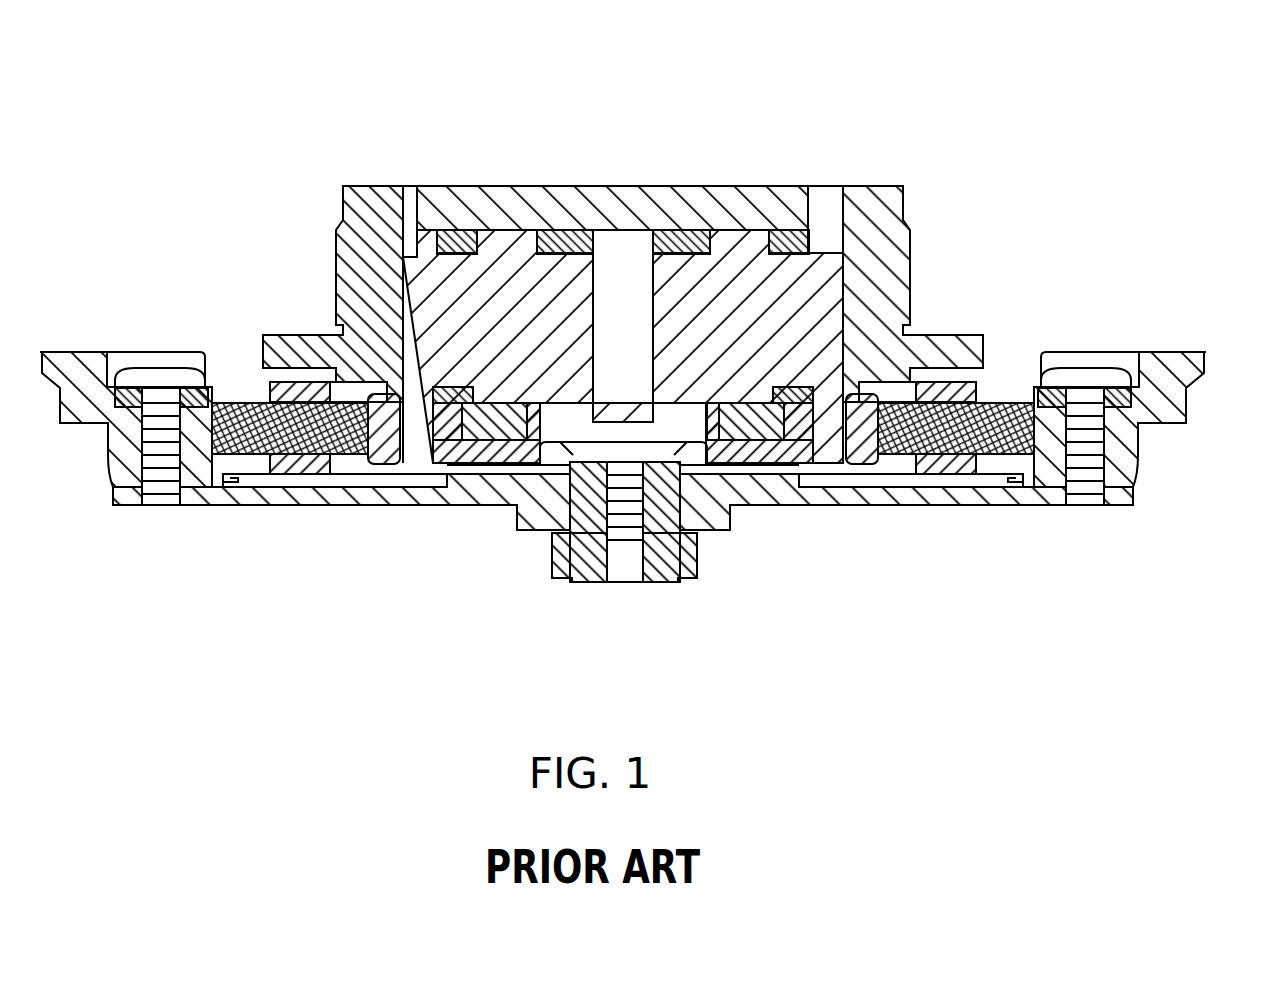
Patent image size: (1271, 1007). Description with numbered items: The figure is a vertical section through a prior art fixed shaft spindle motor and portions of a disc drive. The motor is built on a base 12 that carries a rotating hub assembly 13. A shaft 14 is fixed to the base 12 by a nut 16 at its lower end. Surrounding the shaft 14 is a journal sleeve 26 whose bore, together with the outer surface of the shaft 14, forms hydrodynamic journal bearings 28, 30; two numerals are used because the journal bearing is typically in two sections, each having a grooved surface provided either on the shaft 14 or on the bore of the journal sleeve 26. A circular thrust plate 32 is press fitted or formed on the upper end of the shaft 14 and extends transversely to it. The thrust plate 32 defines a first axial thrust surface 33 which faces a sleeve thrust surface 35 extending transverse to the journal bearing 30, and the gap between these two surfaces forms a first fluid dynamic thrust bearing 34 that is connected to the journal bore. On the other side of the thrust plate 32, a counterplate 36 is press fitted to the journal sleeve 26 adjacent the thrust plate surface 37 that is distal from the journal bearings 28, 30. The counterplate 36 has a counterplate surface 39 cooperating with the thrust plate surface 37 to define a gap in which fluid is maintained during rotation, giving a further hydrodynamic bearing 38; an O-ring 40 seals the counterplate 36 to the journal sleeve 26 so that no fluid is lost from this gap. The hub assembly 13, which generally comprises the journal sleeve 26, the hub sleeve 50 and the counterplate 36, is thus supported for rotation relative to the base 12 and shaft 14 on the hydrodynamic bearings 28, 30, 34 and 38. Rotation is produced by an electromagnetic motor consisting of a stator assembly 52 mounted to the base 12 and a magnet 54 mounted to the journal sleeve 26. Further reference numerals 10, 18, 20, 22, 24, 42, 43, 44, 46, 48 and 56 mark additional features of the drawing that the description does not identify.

The valve assembly 10 is at (232, 160).
The base 12 is at (888, 503).
The hub assembly 13 is at (1012, 340).
The shaft 14 is at (660, 228).
The nut 16 is at (690, 580).
The bore edge 18 is at (607, 228).
The bore edge 20 is at (638, 228).
The seal 22 is at (633, 228).
The piston 24 is at (653, 303).
The journal sleeve 26 is at (592, 303).
The hydrodynamic journal bearing 28 is at (592, 382).
The hydrodynamic journal bearing 30 is at (400, 256).
The thrust plate 32 is at (543, 226).
The first axial thrust surface 33 is at (542, 228).
The first fluid dynamic thrust bearing 34 is at (471, 210).
The sleeve thrust surface 35 is at (598, 283).
The counterplate 36 is at (447, 183).
The thrust plate surface 37 is at (548, 228).
The hydrodynamic bearing 38 is at (570, 228).
The counterplate surface 39 is at (700, 228).
The O-ring 40 is at (793, 228).
The slot wall 42 is at (760, 228).
The seal groove 43 is at (727, 228).
The valve plate 44 is at (745, 455).
The seal assembly 46 is at (483, 470).
The seal ring 48 is at (455, 472).
The hub sleeve 50 is at (908, 232).
The stator assembly 52 is at (298, 474).
The magnet 54 is at (387, 462).
The retainer ring 56 is at (728, 440).